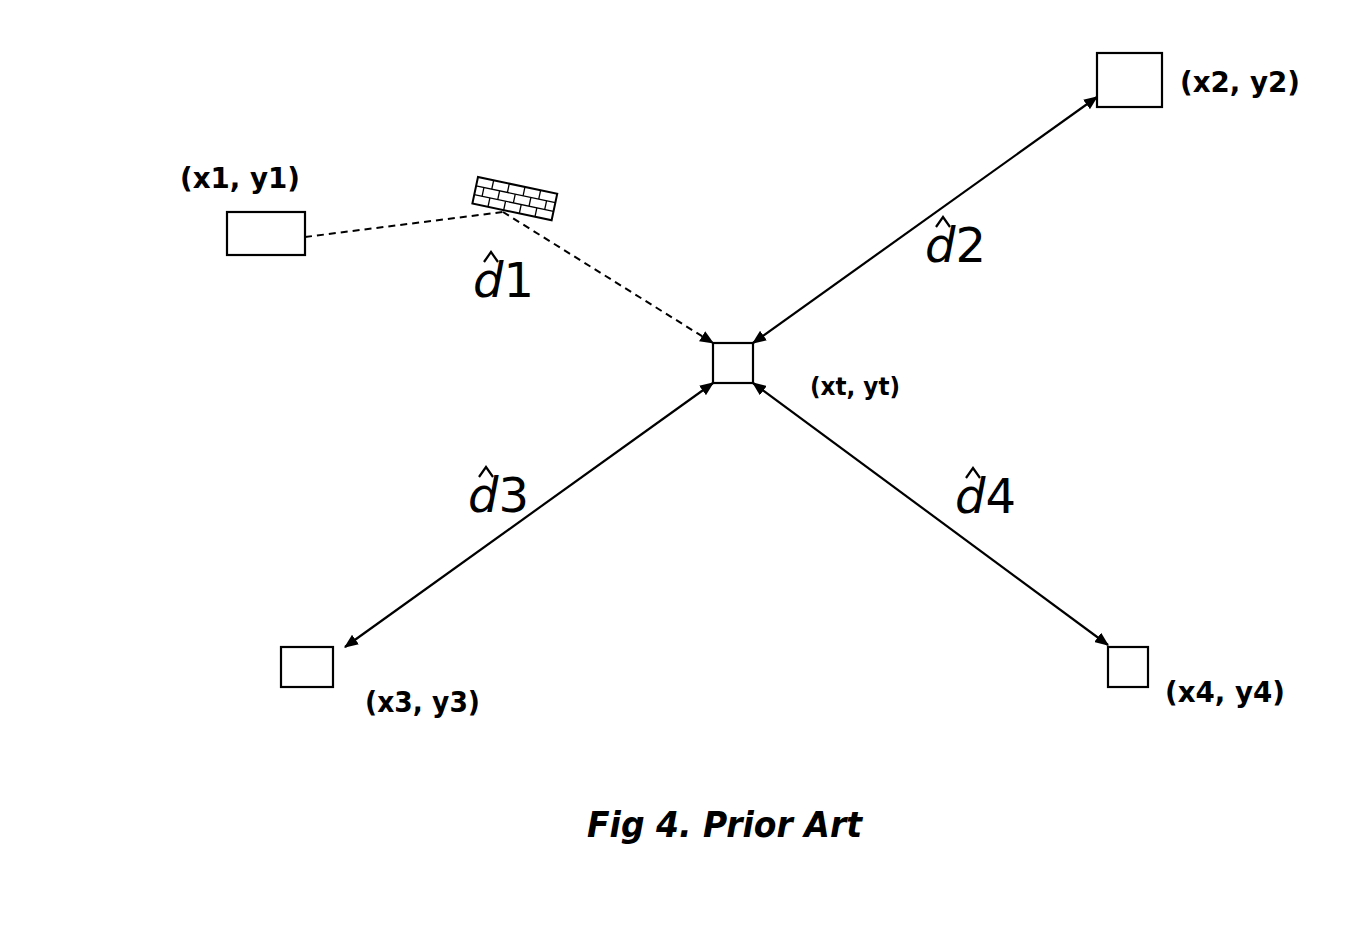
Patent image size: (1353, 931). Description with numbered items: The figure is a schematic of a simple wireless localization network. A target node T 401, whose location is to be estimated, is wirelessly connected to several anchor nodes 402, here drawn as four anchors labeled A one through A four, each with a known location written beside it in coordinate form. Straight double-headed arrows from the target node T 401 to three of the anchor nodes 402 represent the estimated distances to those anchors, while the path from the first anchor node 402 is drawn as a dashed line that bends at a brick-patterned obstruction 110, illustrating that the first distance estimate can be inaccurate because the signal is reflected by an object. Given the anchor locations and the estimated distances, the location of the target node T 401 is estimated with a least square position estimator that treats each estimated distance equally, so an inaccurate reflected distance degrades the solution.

The wall / obstruction 110 is at (520, 183).
The target node T 401 is at (739, 345).
The anchor nodes 402 is at (1097, 53).